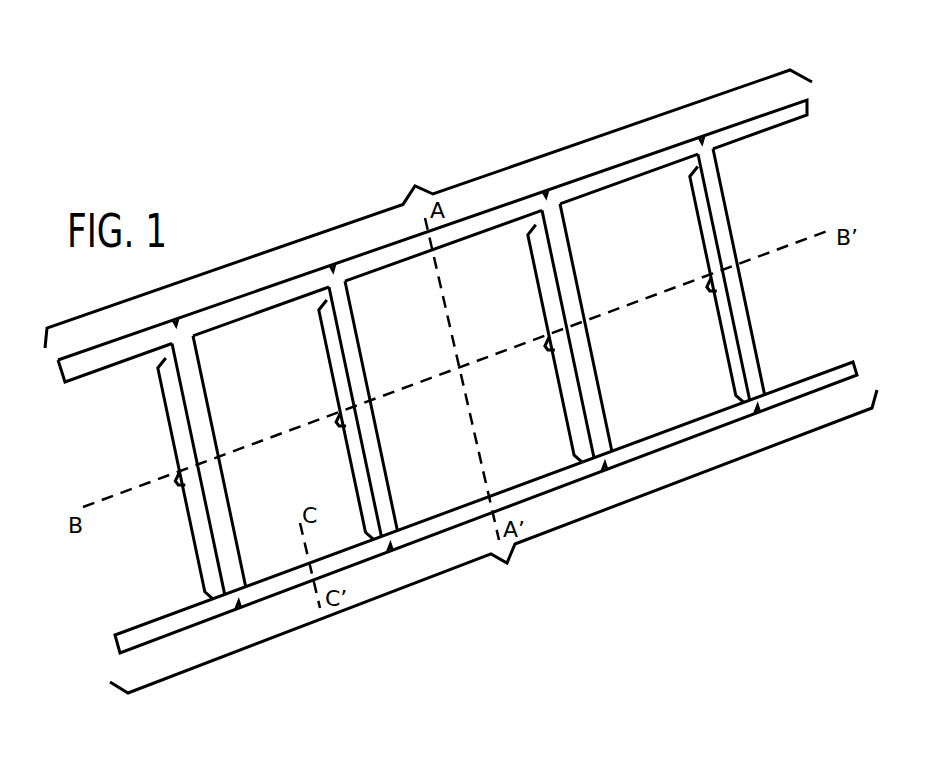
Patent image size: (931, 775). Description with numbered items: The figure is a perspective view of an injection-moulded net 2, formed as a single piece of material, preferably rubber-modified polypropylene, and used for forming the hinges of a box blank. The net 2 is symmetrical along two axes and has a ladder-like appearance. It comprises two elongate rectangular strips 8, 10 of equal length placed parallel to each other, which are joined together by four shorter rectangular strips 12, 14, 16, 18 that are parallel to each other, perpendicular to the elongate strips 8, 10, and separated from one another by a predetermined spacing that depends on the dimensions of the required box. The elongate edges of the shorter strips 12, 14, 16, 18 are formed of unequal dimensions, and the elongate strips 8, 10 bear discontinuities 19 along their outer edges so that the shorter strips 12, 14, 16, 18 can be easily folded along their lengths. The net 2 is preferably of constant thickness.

The net 2 is at (82, 589).
The elongate rectangular strip 8 is at (390, 205).
The elongate rectangular strip 10 is at (450, 576).
The shorter rectangular strip 12 is at (164, 421).
The shorter rectangular strip 14 is at (326, 367).
The shorter rectangular strip 16 is at (536, 295).
The shorter rectangular strip 18 is at (699, 243).
The discontinuities 19 is at (328, 268).